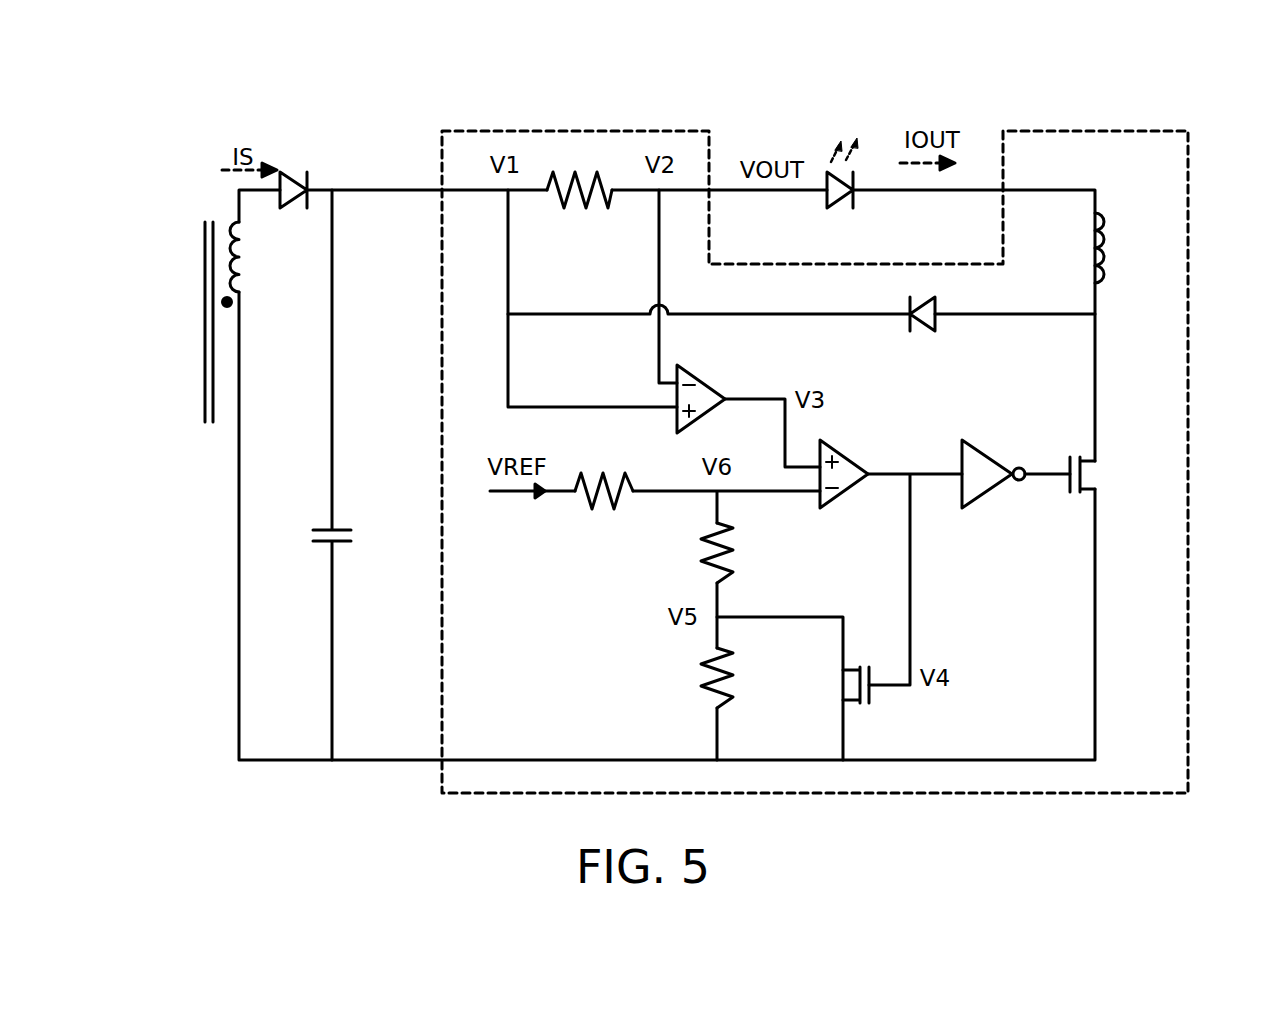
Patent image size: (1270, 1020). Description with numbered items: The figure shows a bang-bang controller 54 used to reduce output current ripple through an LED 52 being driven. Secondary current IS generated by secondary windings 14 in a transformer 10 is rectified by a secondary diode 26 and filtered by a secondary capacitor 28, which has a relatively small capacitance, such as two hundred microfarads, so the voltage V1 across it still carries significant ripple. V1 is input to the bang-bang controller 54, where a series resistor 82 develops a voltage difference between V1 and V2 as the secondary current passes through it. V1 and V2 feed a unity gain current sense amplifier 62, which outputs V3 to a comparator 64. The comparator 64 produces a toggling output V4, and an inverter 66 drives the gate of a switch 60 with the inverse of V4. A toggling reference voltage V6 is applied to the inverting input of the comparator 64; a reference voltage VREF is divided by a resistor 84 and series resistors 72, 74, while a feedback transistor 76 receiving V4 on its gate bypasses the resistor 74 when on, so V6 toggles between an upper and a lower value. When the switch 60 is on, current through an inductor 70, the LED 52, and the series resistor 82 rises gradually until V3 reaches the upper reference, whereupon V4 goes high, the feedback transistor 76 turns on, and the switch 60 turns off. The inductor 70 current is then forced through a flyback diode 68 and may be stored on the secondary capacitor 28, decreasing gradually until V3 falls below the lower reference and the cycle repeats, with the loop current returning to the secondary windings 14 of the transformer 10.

The transformer 10 is at (213, 422).
The secondary windings 14 is at (240, 276).
The secondary diode 26 is at (294, 180).
The secondary capacitor 28 is at (321, 539).
The LED 52 is at (848, 208).
The bang-bang controller 54 is at (594, 690).
The switch 60 is at (1088, 478).
The unity gain current sense amplifier 62 is at (705, 380).
The comparator 64 is at (848, 456).
The inverter 66 is at (990, 455).
The flyback diode 68 is at (922, 331).
The inductor 70 is at (1095, 226).
The resistor 72 is at (735, 578).
The resistor 74 is at (733, 700).
The feedback transistor 76 is at (857, 675).
The series resistor 82 is at (592, 210).
The resistor 84 is at (600, 510).